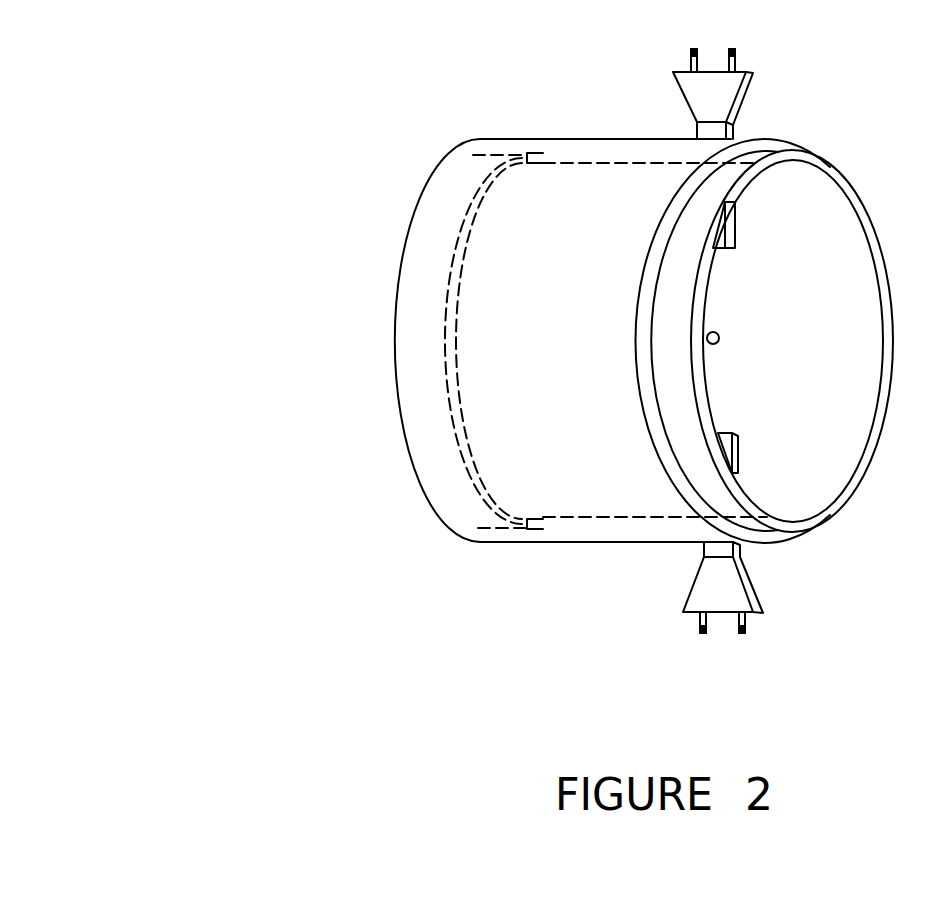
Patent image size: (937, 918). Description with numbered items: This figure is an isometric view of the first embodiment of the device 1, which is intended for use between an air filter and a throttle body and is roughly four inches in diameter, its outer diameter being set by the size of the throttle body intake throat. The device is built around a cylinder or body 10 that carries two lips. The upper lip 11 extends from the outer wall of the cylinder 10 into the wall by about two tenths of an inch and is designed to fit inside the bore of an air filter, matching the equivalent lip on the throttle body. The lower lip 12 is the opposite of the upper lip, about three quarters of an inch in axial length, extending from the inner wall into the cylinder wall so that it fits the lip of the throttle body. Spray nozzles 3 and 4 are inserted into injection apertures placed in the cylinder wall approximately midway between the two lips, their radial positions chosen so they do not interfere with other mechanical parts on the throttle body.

The device 1 is at (225, 77).
The spray nozzle 3 is at (748, 97).
The spray nozzle 4 is at (747, 573).
The cylinder or body 10 is at (627, 147).
The upper lip 11 is at (700, 475).
The lower lip 12 is at (468, 227).